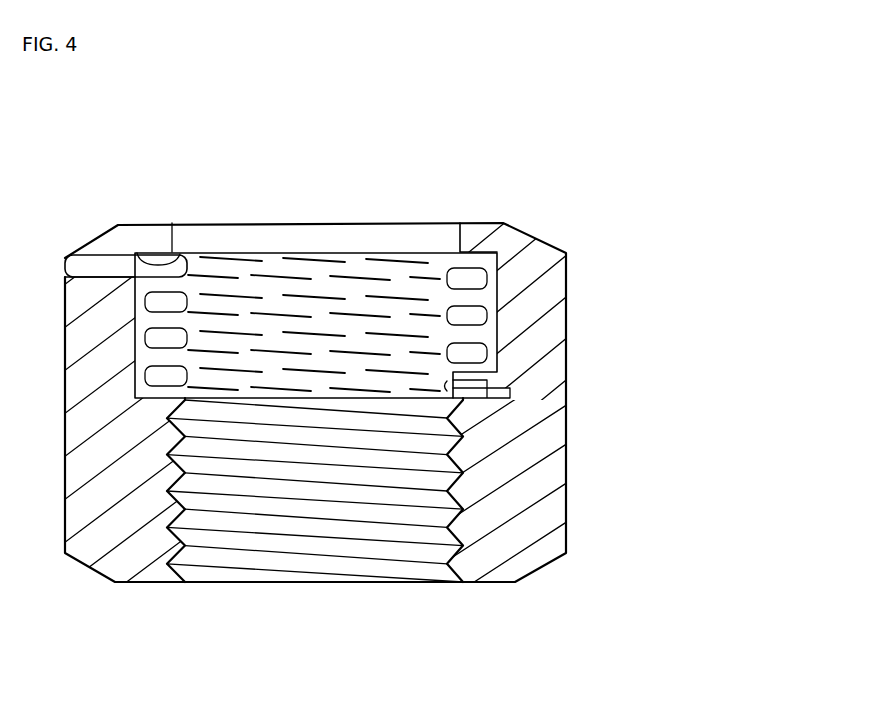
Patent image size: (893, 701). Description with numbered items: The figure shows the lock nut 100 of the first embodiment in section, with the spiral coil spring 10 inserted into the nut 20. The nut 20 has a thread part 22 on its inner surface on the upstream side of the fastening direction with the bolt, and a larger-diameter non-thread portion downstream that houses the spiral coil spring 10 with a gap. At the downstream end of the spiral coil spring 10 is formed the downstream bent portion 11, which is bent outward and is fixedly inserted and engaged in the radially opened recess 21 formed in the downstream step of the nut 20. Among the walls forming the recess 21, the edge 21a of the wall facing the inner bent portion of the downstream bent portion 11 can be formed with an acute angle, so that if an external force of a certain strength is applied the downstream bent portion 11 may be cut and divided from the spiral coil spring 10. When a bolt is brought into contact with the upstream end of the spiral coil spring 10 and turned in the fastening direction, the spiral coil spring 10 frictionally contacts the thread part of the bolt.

The lock nut 100 is at (646, 256).
The spiral coil spring 10 is at (478, 320).
The downstream bent portion 11 is at (93, 267).
The nut 20 is at (547, 447).
The recess 21 is at (122, 246).
The edge 21a is at (175, 265).
The thread part 22 is at (447, 527).